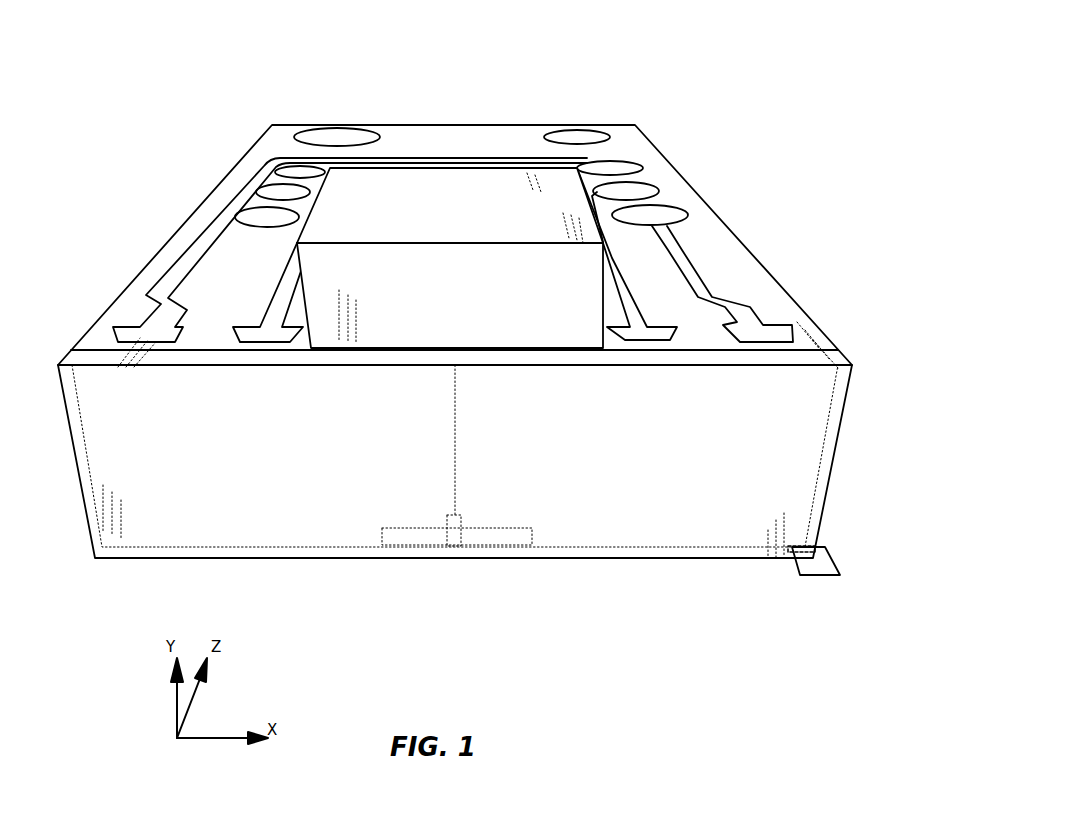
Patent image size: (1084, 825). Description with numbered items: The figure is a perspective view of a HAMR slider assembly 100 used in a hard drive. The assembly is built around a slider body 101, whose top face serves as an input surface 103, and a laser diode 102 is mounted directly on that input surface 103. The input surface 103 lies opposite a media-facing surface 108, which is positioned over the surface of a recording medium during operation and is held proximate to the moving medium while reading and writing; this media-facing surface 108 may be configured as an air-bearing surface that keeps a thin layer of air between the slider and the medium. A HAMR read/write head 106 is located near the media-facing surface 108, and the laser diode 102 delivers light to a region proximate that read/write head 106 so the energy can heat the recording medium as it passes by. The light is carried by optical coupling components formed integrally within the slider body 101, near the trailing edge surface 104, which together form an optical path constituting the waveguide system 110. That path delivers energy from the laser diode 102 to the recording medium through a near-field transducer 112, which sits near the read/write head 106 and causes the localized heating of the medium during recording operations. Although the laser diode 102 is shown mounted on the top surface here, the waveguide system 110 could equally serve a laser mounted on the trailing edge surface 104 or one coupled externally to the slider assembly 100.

The HAMR slider assembly 100 is at (649, 67).
The slider body 101 is at (248, 153).
The laser diode 102 is at (407, 178).
The input surface 103 is at (123, 308).
The trailing edge surface 104 is at (158, 537).
The read/write head 106 is at (462, 545).
The media-facing surface 108 is at (833, 577).
The waveguide system 110 is at (455, 437).
The near-field transducer 112 is at (452, 548).